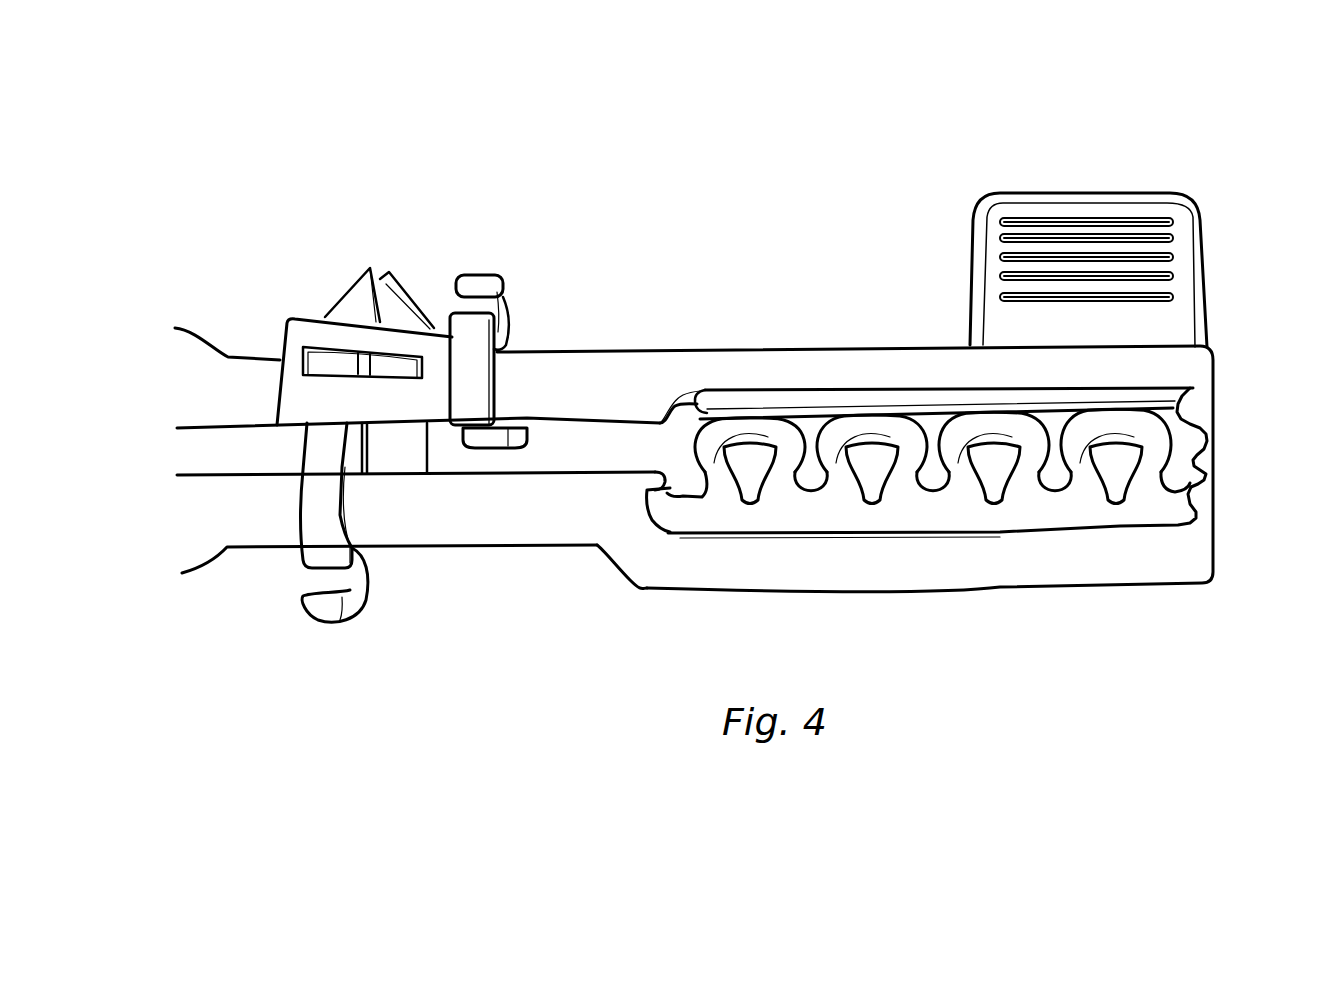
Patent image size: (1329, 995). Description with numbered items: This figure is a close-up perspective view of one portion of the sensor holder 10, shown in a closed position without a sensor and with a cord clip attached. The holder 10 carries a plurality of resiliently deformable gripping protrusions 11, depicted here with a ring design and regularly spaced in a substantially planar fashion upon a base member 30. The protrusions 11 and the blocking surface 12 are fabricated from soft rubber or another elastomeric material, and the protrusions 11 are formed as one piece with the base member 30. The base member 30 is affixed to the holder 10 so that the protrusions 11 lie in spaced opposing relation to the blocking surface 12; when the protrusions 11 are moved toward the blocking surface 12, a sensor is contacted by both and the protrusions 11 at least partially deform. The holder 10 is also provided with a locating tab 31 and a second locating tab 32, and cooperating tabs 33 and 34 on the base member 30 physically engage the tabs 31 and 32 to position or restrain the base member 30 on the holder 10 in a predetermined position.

The sensor holder 10 is at (822, 174).
The resiliently deformable gripping protrusion 11 is at (713, 437).
The blocking surface 12 is at (803, 413).
The base member 30 is at (1152, 508).
The locating tab 31 is at (647, 482).
The second locating tab 32 is at (1190, 478).
The cooperating tab 33 is at (657, 512).
The cooperating tab 34 is at (1187, 513).